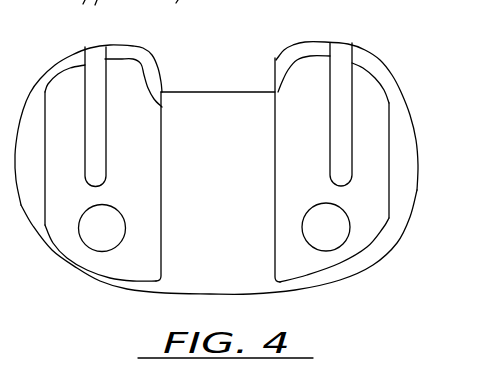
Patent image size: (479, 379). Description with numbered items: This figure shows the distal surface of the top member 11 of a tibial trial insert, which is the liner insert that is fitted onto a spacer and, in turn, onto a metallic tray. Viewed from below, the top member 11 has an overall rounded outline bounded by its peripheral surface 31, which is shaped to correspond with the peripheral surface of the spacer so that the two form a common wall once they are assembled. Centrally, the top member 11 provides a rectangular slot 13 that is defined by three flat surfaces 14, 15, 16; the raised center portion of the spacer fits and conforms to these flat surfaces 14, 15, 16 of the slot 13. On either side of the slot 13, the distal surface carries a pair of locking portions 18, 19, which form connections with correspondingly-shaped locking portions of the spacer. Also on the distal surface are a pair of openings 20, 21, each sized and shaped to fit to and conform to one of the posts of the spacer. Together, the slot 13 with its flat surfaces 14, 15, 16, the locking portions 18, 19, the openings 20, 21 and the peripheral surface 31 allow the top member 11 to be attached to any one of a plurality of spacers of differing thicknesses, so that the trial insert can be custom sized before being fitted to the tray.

The top member 11 is at (393, 74).
The rectangular slot 13 is at (191, 262).
The flat surface 14 is at (220, 160).
The flat surface 15 is at (273, 122).
The flat surface 16 is at (163, 112).
The locking portion 18 is at (316, 54).
The locking portion 19 is at (72, 78).
The opening 20 is at (330, 237).
The opening 21 is at (101, 233).
The peripheral surface 31 is at (380, 73).